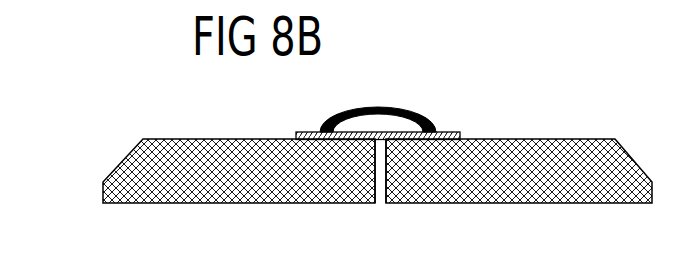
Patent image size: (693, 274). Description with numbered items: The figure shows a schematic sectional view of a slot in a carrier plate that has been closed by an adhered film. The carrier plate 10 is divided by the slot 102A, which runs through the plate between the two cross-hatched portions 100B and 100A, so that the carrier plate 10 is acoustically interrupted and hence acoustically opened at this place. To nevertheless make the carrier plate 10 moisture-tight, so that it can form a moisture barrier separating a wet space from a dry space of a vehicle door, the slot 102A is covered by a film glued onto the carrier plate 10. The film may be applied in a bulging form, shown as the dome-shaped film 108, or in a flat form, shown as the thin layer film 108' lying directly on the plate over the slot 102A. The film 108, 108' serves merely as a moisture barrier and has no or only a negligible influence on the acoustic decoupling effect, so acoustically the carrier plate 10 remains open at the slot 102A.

The carrier plate 10 is at (377, 178).
The first substrate portion 100A is at (547, 185).
The second substrate portion 100B is at (228, 193).
The slot 102A is at (378, 188).
The film 108 is at (378, 98).
The film 108' is at (406, 109).